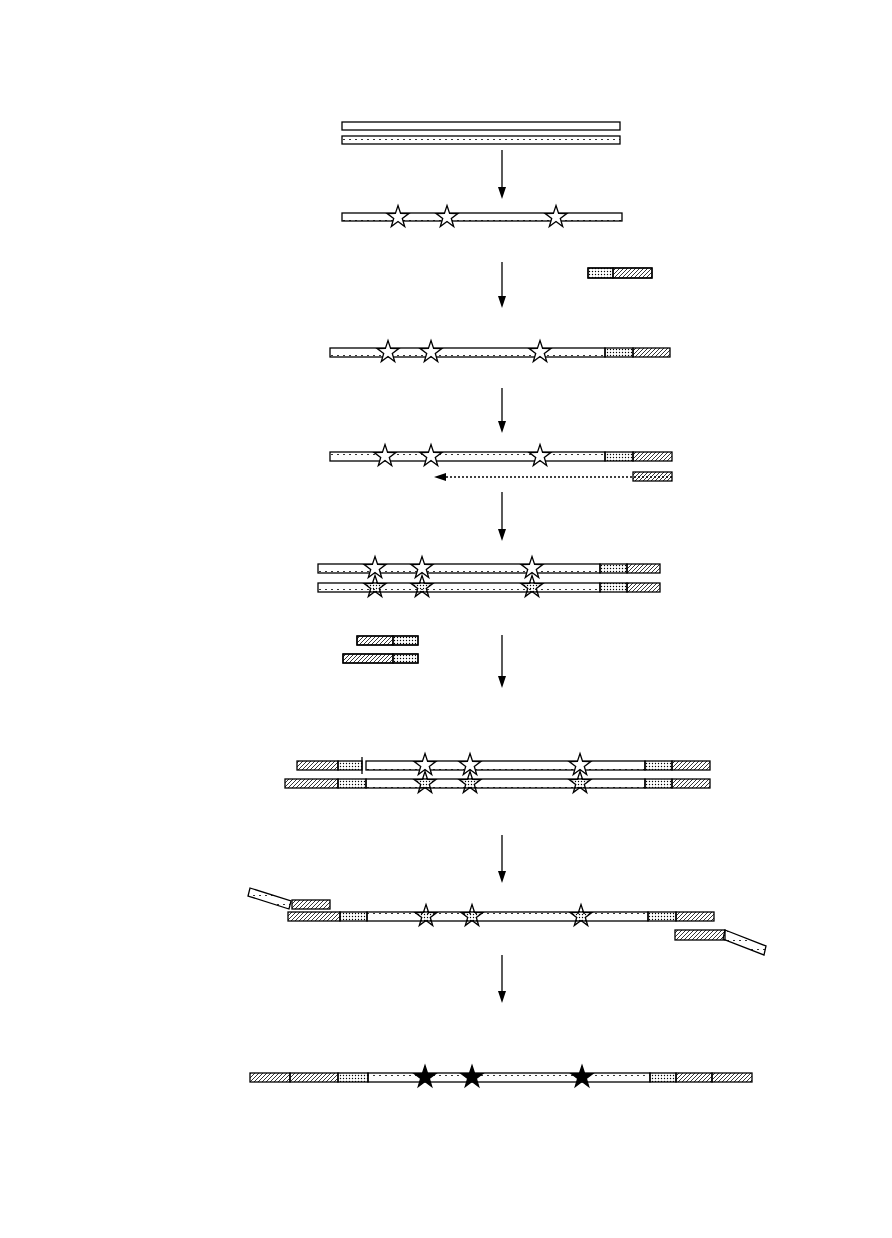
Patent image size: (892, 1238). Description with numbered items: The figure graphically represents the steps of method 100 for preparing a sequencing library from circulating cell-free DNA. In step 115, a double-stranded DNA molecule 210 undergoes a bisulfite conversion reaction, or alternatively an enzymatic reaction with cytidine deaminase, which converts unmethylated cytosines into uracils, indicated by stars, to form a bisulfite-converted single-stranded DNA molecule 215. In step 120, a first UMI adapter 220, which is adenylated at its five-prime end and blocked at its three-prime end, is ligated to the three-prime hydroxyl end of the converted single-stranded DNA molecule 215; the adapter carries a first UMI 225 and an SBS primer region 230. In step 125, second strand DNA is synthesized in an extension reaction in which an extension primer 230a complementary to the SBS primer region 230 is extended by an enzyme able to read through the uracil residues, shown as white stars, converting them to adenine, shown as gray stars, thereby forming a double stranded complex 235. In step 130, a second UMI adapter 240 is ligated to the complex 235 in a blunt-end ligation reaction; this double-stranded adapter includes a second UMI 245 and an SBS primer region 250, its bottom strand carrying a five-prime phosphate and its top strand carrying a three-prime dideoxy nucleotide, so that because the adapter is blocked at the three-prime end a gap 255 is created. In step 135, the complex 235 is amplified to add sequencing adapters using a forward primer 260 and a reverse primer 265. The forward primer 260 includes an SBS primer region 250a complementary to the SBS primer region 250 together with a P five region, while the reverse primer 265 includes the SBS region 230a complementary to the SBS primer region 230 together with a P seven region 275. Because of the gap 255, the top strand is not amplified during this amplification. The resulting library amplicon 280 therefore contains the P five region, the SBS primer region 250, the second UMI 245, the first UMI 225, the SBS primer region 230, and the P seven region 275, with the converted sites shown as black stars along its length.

The method 100 is at (170, 60).
The bisulfite conversion step 115 is at (212, 150).
The first adapter ligation step 120 is at (212, 264).
The second strand synthesis step 125 is at (212, 448).
The second adapter ligation step 130 is at (212, 600).
The amplification step 135 is at (212, 879).
The double-stranded DNA molecule 210 is at (586, 110).
The bisulfite-converted single-stranded DNA molecule 215 is at (588, 211).
The first UMI adapter 220 is at (716, 248).
The first UMI 225 is at (598, 280).
The SBS primer region 230 is at (647, 280).
The extension primer / SBS region 230a is at (653, 481).
The double stranded complex 235 is at (375, 549).
The second UMI adapter 240 is at (339, 639).
The second UMI 245 is at (410, 664).
The SBS primer region 250 is at (358, 664).
The SBS primer region 250a is at (317, 899).
The gap 255 is at (362, 759).
The forward primer 260 is at (274, 878).
The reverse primer 265 is at (661, 953).
The P7 region 275 is at (750, 958).
The library amplicon 280 is at (247, 1056).